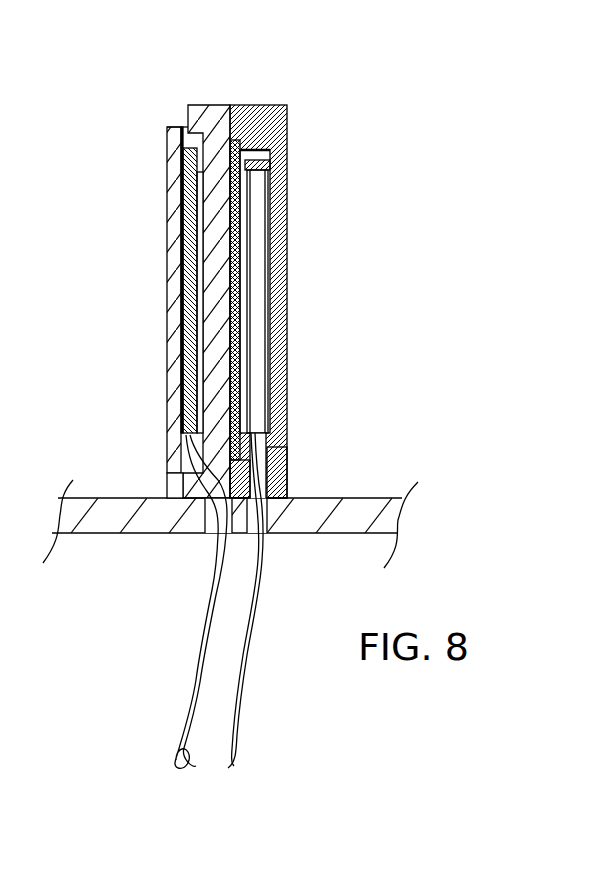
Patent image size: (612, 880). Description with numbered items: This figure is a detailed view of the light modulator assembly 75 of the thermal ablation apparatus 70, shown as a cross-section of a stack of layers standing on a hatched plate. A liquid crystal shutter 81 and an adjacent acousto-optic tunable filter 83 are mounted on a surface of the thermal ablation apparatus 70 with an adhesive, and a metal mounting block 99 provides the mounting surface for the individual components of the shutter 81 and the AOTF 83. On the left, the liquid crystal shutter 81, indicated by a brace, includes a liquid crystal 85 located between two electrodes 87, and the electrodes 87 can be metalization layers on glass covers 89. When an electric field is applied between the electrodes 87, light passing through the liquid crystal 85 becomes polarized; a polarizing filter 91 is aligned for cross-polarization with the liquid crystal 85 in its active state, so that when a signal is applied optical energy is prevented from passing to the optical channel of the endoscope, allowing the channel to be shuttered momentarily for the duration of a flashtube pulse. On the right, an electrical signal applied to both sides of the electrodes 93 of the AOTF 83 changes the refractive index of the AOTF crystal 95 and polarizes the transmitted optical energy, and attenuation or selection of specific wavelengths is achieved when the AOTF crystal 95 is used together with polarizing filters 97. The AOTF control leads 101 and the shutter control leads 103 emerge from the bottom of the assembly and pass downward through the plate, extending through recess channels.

The thermal ablation apparatus 70 is at (115, 535).
The light modulator assembly 75 is at (233, 249).
The liquid crystal shutter 81 is at (166, 268).
The acousto-optic tunable filter 83 is at (287, 120).
The liquid crystal 85 is at (182, 242).
The electrodes 87 is at (181, 328).
The glass covers 89 is at (167, 442).
The polarizing filter 91 is at (223, 540).
The electrodes of the AOTF 93 is at (270, 182).
The AOTF crystal 95 is at (255, 333).
The polarizing filters 97 is at (287, 393).
The metal mounting block 99 is at (255, 105).
The AOTF control leads 101 is at (243, 722).
The shutter control leads 103 is at (190, 680).